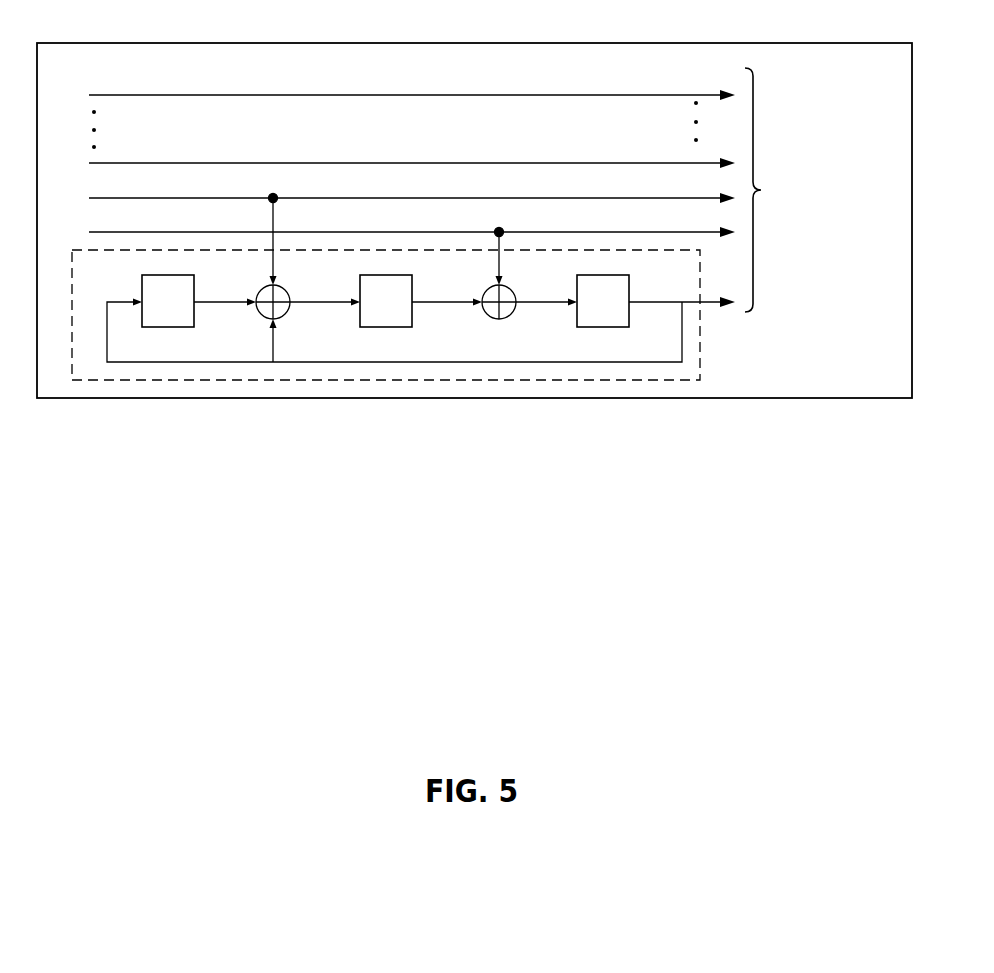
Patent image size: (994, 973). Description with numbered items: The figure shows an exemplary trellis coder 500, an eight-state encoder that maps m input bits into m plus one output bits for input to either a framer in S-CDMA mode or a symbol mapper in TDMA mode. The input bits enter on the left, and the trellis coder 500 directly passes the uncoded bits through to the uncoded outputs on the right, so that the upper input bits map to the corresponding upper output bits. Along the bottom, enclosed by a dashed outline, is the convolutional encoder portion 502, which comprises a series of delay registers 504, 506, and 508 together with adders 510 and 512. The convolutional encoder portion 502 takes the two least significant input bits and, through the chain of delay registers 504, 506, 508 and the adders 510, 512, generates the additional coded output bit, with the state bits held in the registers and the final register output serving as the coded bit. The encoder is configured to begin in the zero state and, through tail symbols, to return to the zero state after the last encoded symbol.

The trellis coder 500 is at (727, 43).
The convolutional encoder portion 502 is at (158, 380).
The delay register 504 is at (195, 311).
The delay register 506 is at (412, 311).
The delay register 508 is at (629, 311).
The adder 510 is at (290, 311).
The adder 512 is at (516, 311).